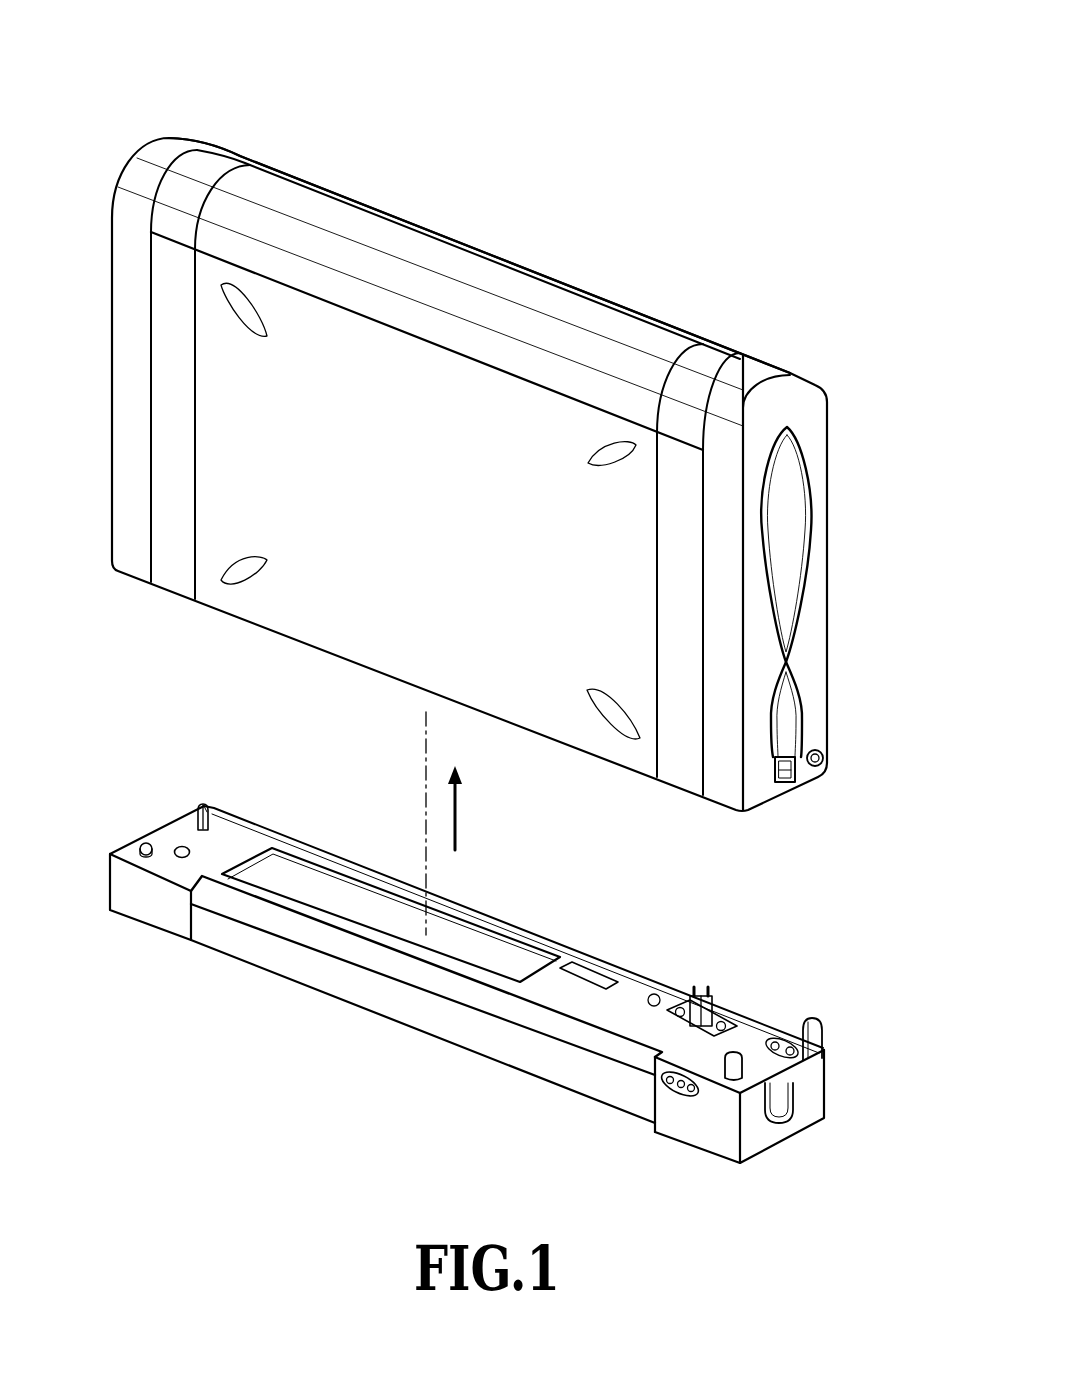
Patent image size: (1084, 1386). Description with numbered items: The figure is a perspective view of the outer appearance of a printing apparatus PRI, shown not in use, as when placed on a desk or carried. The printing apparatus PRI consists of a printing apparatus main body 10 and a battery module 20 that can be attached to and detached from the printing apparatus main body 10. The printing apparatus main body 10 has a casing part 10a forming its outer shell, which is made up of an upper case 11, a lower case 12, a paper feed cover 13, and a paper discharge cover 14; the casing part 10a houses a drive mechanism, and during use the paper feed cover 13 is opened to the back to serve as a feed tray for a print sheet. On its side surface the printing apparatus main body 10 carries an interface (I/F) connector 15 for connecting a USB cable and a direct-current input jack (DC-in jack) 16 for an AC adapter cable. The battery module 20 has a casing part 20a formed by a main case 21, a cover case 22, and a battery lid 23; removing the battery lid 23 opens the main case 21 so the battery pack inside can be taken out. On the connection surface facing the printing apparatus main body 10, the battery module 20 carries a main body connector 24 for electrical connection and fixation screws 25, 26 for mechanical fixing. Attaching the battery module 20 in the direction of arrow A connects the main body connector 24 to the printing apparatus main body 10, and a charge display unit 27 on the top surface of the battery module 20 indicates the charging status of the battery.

The printing apparatus PRI is at (655, 83).
The printing apparatus main body 10 is at (641, 266).
The casing part 10a is at (315, 186).
The upper case 11 is at (752, 383).
The lower case 12 is at (778, 370).
The paper feed cover 13 is at (368, 238).
The paper discharge cover 14 is at (490, 262).
The interface (I/F) connector 15 is at (789, 757).
The direct-current input jack (DC-in jack) 16 is at (824, 752).
The battery module 20 is at (604, 928).
The casing part 20a is at (317, 856).
The main case 21 is at (143, 903).
The cover case 22 is at (170, 835).
The battery lid 23 is at (348, 986).
The main body connector 24 is at (697, 994).
The fixation screw 25 is at (733, 1054).
The fixation screw 26 is at (203, 806).
The charge display unit 27 is at (665, 1088).